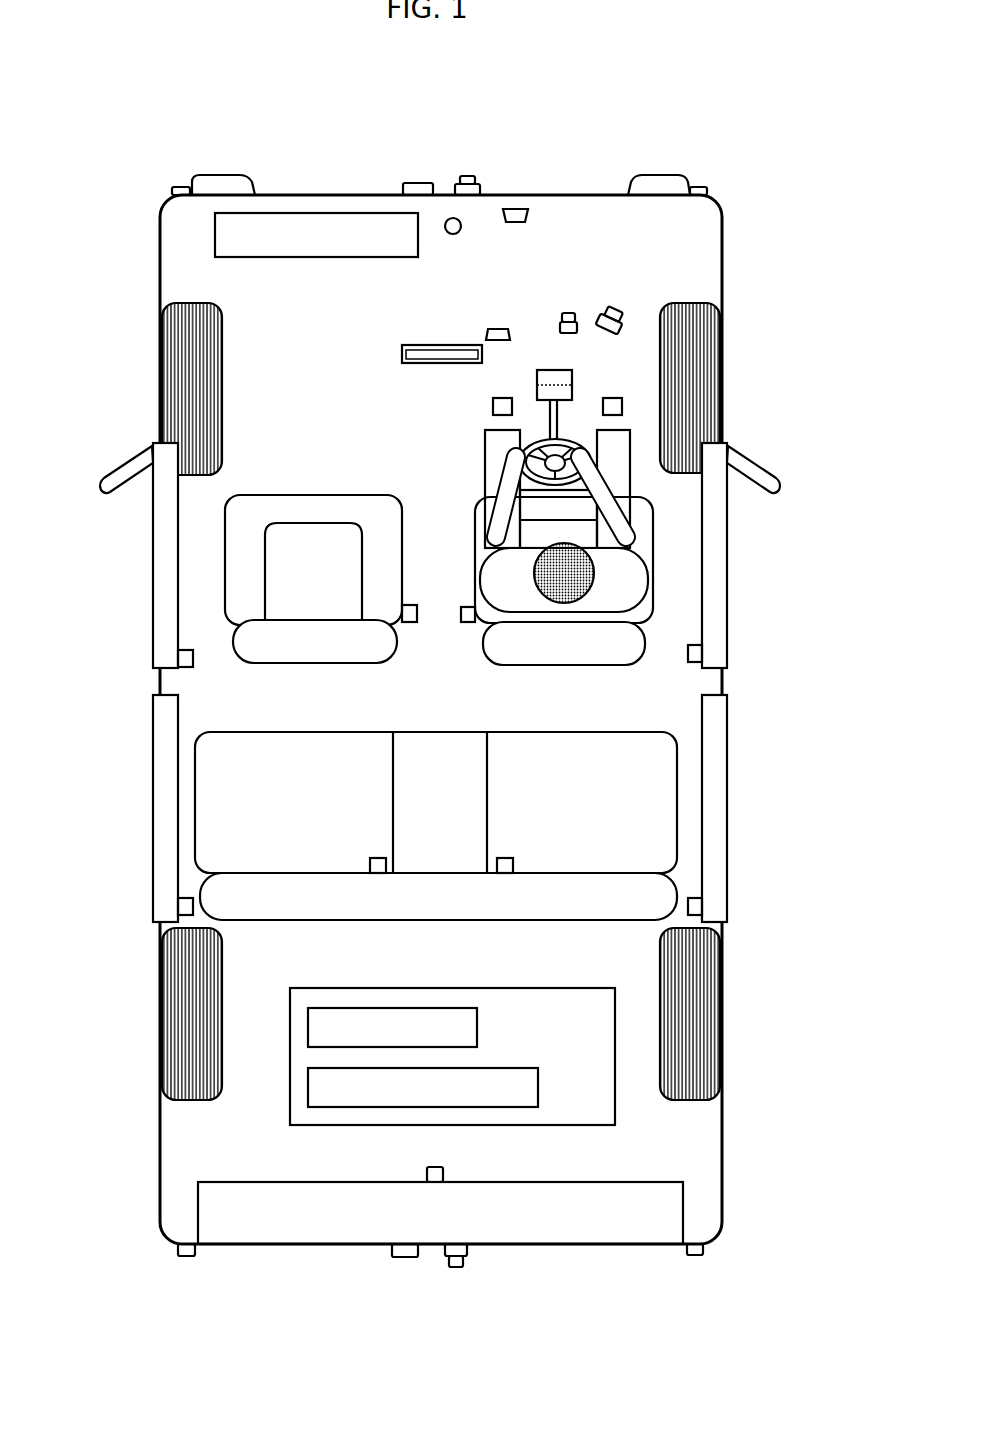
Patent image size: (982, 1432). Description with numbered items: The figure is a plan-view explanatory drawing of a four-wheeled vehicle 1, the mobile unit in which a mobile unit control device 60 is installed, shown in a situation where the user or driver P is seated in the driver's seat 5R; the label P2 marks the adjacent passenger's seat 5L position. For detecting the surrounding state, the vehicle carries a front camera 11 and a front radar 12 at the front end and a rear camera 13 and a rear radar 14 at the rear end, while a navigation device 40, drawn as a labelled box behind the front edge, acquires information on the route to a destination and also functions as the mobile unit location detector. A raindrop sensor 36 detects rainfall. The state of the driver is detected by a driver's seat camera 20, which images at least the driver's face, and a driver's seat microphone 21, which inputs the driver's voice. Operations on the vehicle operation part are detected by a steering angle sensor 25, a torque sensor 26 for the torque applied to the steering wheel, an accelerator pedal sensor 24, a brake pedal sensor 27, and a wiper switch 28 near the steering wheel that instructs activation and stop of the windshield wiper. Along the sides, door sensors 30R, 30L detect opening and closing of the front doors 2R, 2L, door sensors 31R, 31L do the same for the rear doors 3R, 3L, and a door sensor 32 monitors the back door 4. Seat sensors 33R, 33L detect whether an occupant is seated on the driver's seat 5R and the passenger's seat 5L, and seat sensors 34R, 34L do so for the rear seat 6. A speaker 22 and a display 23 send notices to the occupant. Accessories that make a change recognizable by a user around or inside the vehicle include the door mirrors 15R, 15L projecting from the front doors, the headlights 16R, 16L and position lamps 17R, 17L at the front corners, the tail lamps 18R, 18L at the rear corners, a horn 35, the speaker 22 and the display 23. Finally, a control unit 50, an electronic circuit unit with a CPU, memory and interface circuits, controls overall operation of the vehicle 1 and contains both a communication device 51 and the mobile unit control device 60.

The four-wheeled vehicle 1 is at (585, 195).
The front door 2L is at (153, 600).
The front door 2R is at (727, 598).
The rear door 3L is at (153, 853).
The rear door 3R is at (727, 850).
The back door 4 is at (613, 1232).
The passenger's seat 5L is at (338, 648).
The driver's seat 5R is at (570, 561).
The rear seat 6 is at (280, 912).
The front camera 11 is at (466, 175).
The front radar 12 is at (413, 182).
The rear camera 13 is at (455, 1268).
The rear radar 14 is at (406, 1258).
The door mirror 15L is at (125, 462).
The door mirror 15R is at (748, 462).
The headlight 16L is at (224, 173).
The headlight 16R is at (673, 173).
The position lamp 17L is at (180, 185).
The position lamp 17R is at (707, 186).
The tail lamp 18L is at (186, 1257).
The tail lamp 18R is at (694, 1257).
The driver's seat camera 20 is at (613, 313).
The driver's seat microphone 21 is at (565, 312).
The speaker 22 is at (497, 328).
The display 23 is at (443, 345).
The accelerator pedal sensor 24 is at (612, 399).
The steering angle sensor 25 is at (556, 380).
The torque sensor 26 is at (538, 386).
The brake pedal sensor 27 is at (492, 405).
The wiper switch 28 is at (522, 450).
The door sensor 30L is at (178, 658).
The door sensor 30R is at (702, 655).
The door sensor 31L is at (185, 907).
The door sensor 31R is at (702, 906).
The door sensor 32 is at (447, 1175).
The seat sensor 33L is at (412, 623).
The seat sensor 33R is at (464, 624).
The seat sensor 34L is at (372, 858).
The seat sensor 34R is at (515, 858).
The horn 35 is at (528, 213).
The raindrop sensor 36 is at (462, 231).
The navigation device 40 is at (300, 213).
The control unit 50 is at (447, 988).
The communication device 51 is at (477, 1027).
The mobile unit control device 60 is at (538, 1085).
The user (driver) P is at (628, 580).
The passenger P2 is at (250, 580).